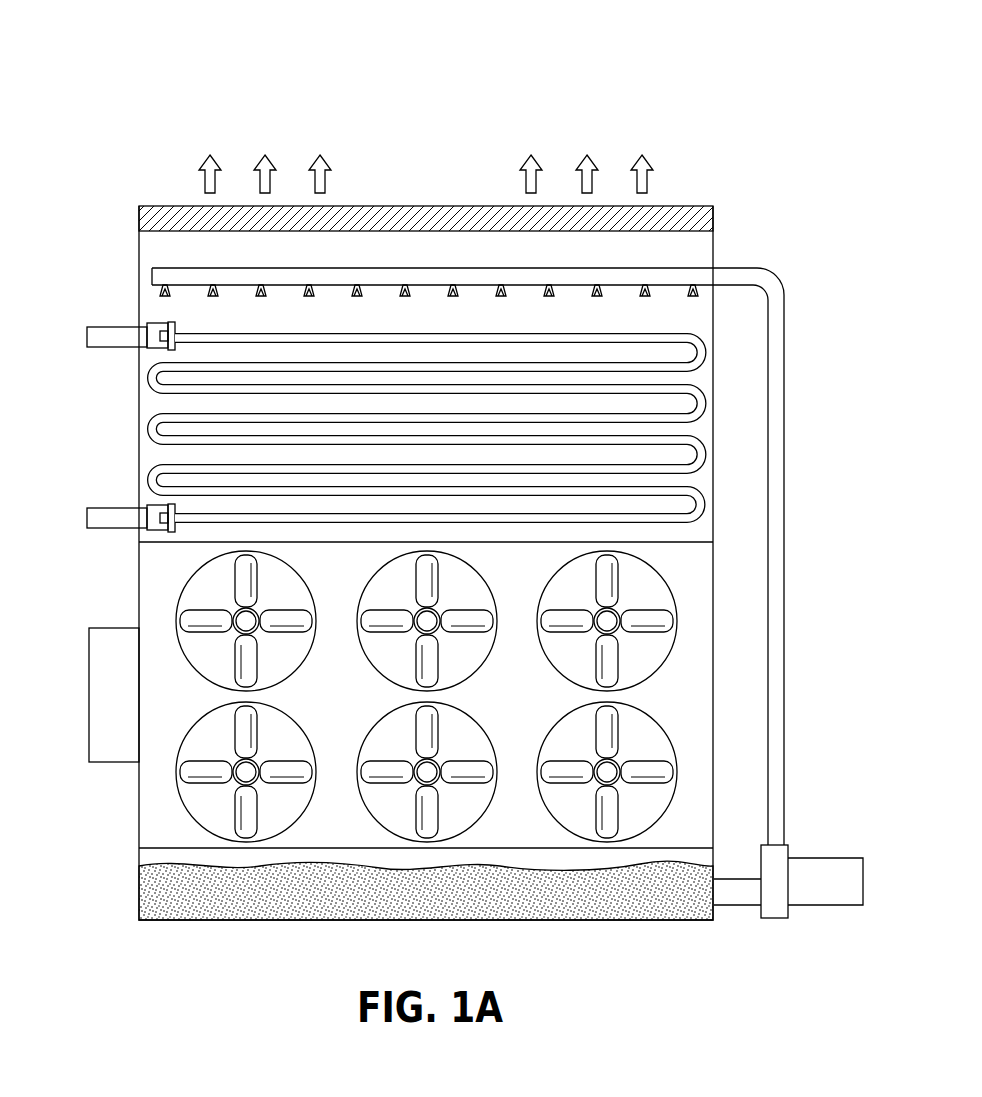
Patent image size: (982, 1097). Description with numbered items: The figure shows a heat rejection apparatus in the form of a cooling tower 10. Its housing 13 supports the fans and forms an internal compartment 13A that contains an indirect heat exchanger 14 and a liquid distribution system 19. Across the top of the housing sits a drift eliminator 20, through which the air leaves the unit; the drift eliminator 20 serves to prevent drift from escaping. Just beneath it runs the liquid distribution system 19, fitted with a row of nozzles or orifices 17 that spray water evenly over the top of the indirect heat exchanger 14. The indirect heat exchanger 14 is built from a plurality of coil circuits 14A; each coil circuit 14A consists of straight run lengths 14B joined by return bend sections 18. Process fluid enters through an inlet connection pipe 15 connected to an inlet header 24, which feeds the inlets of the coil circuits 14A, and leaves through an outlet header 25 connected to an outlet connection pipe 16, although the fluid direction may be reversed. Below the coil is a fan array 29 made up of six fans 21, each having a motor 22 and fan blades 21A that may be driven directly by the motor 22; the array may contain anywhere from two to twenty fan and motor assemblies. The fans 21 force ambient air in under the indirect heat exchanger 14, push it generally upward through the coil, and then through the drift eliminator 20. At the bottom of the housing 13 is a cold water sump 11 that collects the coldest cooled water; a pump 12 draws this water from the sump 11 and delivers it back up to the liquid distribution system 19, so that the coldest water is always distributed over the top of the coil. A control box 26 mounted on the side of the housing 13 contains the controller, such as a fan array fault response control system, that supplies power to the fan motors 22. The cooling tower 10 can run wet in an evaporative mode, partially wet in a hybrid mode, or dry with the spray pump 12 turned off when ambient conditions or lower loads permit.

The cooling tower 10 is at (698, 72).
The cold water sump 11 is at (138, 892).
The pump 12 is at (825, 858).
The housing 13 is at (138, 802).
The internal compartment 13A is at (150, 833).
The indirect heat exchanger 14 is at (163, 460).
The coil circuits 14A is at (667, 438).
The run lengths 14B is at (667, 492).
The inlet connection pipe 15 is at (112, 347).
The outlet connection pipe 16 is at (112, 530).
The nozzles 17 is at (163, 290).
The return bend sections 18 is at (705, 351).
The liquid distribution system 19 is at (784, 310).
The drift eliminator 20 is at (715, 218).
The fans 21 is at (655, 600).
The fan blades 21A is at (206, 760).
The motors 22 is at (607, 621).
The inlet header 24 is at (160, 323).
The outlet header 25 is at (160, 508).
The control box 26 is at (88, 697).
The fan array 29 is at (165, 578).